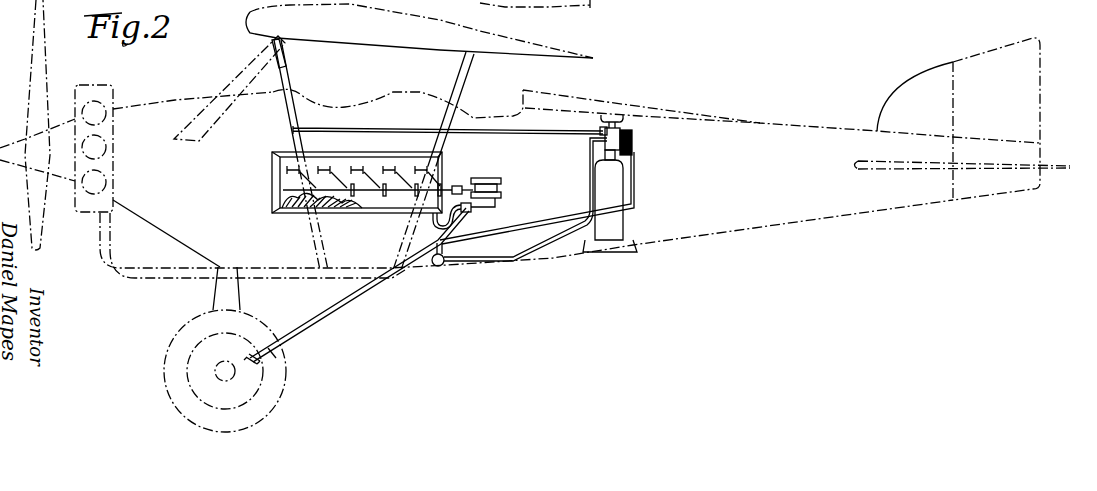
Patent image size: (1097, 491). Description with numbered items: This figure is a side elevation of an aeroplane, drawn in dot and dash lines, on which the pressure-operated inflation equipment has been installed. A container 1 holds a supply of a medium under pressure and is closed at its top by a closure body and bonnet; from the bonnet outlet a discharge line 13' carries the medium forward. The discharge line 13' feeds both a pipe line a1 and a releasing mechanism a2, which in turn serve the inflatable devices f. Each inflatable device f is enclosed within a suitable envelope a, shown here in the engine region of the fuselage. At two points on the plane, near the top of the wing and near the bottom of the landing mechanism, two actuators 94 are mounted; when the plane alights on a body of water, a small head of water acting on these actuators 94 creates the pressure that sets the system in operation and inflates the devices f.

The container 1 is at (617, 187).
The envelope a is at (272, 200).
The pipe line a1 is at (472, 210).
The releasing mechanism a2 is at (489, 179).
The inflatable device f is at (313, 221).
The actuator 94 is at (287, 60).
The discharge line 13' is at (519, 222).